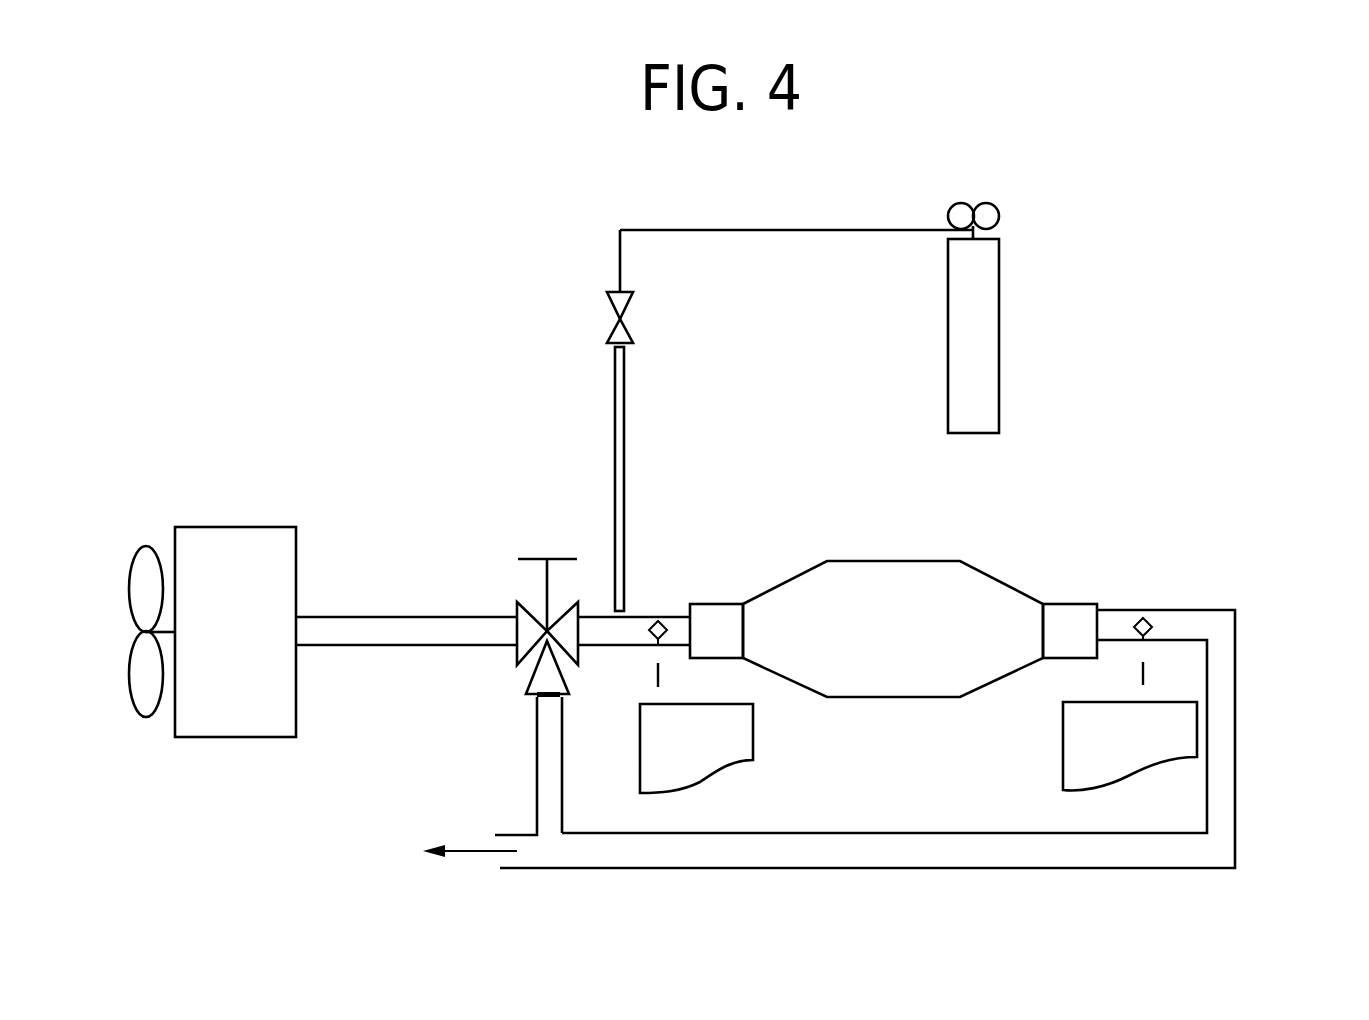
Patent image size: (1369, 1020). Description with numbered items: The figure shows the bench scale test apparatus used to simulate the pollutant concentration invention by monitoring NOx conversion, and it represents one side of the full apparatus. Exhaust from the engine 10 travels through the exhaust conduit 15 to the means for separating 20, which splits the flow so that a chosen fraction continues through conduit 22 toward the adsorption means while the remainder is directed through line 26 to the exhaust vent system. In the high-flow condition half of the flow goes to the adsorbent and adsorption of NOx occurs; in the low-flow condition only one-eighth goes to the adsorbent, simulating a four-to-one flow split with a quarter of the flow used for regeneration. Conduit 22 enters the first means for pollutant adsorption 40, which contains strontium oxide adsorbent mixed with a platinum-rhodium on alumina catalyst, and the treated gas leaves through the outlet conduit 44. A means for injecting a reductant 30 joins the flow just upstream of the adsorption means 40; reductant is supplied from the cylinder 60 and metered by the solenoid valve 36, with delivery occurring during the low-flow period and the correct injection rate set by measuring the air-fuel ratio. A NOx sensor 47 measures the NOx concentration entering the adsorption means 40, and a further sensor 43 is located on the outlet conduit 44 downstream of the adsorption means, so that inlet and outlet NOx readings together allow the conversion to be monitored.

The engine 10 is at (207, 538).
The exhaust conduit 15 is at (380, 634).
The means for separating 20 is at (530, 600).
The conduit 22 is at (617, 636).
The bypass exhaust pipe to vent 26 is at (551, 757).
The means for injecting a reductant 30 is at (627, 536).
The solenoid valve 36 is at (626, 326).
The first means for pollutant adsorption 40 is at (980, 590).
The outlet NOx sensor 43 is at (1155, 620).
The outlet conduit 44 is at (1223, 682).
The NOx sensor 47 is at (667, 620).
The cylinder 60 is at (1000, 305).